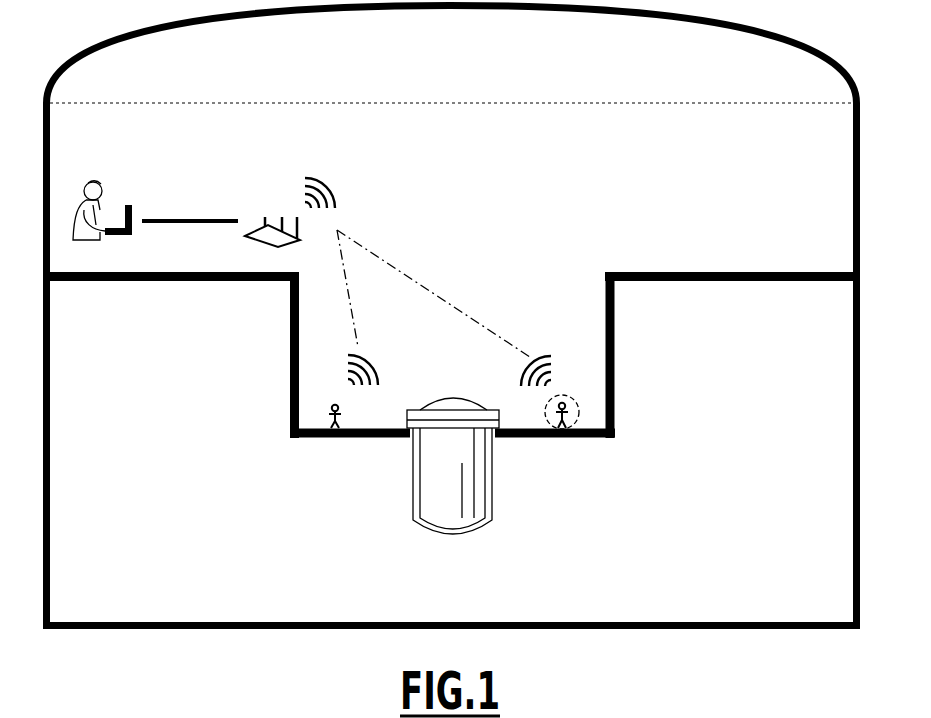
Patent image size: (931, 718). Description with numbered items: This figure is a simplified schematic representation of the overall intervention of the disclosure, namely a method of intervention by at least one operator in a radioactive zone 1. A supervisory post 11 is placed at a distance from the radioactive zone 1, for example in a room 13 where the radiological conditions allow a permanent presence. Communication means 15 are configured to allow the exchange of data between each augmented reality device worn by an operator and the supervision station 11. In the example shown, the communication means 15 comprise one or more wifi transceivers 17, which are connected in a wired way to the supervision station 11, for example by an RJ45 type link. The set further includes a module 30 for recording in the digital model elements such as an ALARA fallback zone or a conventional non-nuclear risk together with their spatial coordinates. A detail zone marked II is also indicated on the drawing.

The radioactive zone 1 is at (533, 303).
The supervisory post 11 is at (132, 206).
The room 13 is at (48, 193).
The communication means 15 is at (278, 197).
The wifi transceivers 17 is at (270, 242).
The module for recording 30 is at (113, 240).
The detail zone II is at (580, 410).